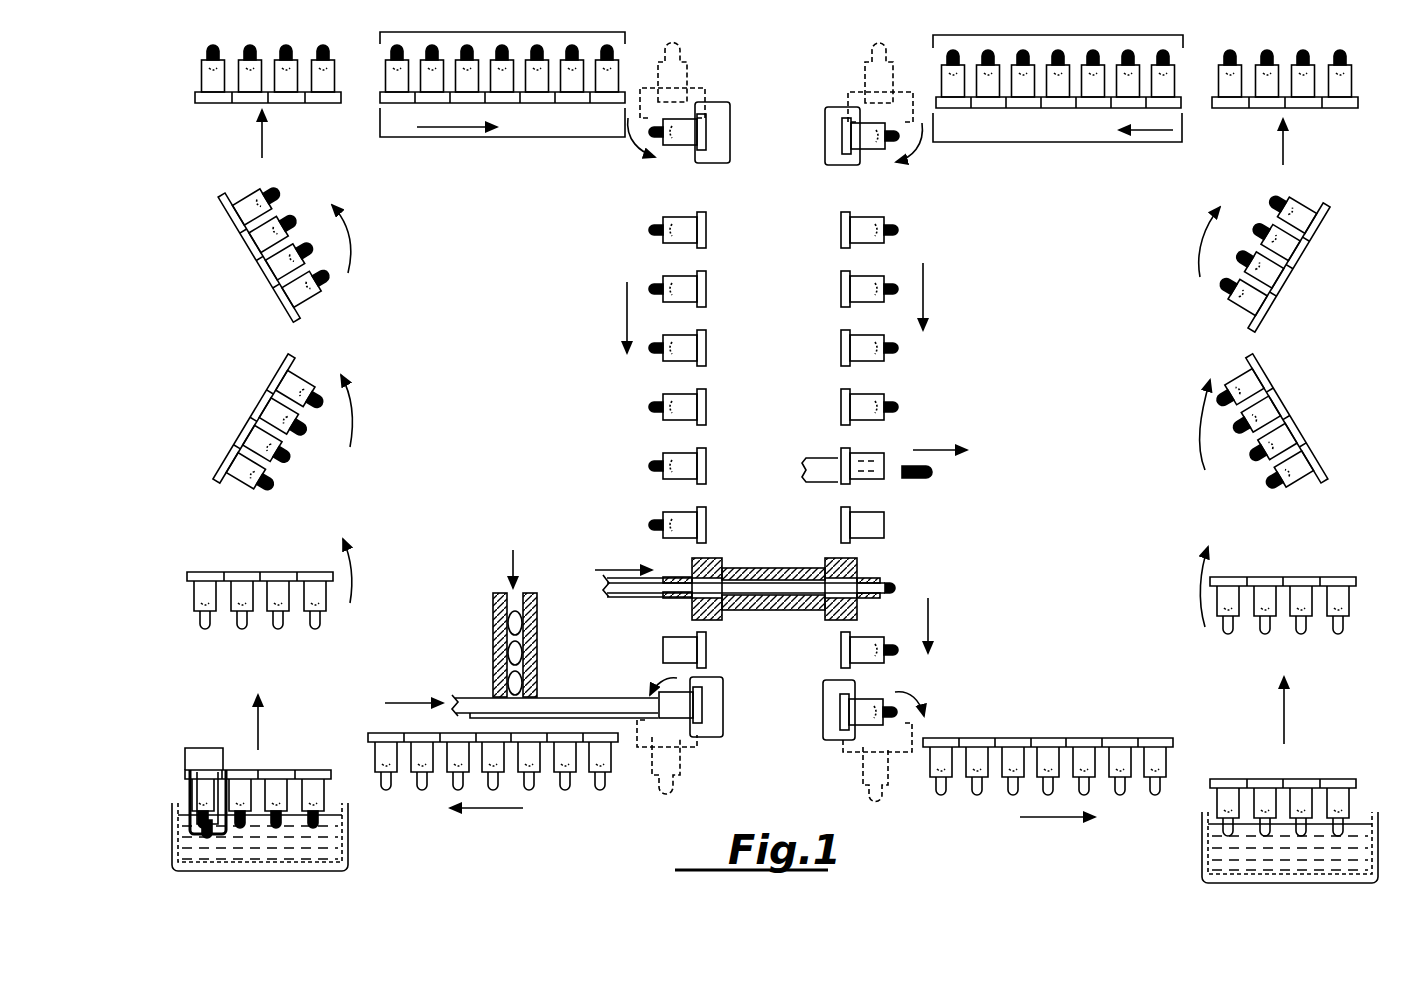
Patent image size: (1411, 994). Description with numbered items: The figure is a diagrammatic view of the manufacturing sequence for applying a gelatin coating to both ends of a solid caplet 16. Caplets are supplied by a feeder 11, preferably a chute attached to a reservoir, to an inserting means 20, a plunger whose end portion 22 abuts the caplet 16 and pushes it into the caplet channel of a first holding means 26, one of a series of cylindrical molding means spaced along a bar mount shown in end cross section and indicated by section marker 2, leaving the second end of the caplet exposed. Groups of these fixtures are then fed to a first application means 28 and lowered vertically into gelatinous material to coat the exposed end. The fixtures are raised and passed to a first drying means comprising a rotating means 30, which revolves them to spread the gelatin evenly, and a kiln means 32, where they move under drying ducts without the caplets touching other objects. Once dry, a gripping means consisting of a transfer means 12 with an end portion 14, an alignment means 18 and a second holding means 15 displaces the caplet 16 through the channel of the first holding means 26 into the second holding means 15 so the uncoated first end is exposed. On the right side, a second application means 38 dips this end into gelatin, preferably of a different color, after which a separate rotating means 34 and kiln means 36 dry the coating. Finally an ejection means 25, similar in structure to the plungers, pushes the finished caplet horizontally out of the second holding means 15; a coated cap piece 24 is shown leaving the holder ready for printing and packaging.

The section view indicator 2 is at (185, 750).
The feeder 11 is at (497, 648).
The transfer means 12 is at (640, 590).
The end portion 14 is at (870, 575).
The second holding means 15 is at (877, 598).
The caplet 16 is at (903, 590).
The alignment means 18 is at (790, 570).
The inserting means 20 is at (608, 698).
The end portion 22 is at (637, 697).
The cap 24 is at (890, 478).
The ejection means 25 is at (823, 470).
The first holding means 26 is at (182, 788).
The first application means 28 is at (320, 847).
The rotating means 30 is at (320, 465).
The kiln means 32 is at (533, 116).
The rotating means 34 is at (1302, 425).
The kiln means 36 is at (1040, 119).
The second application means 38 is at (1202, 845).